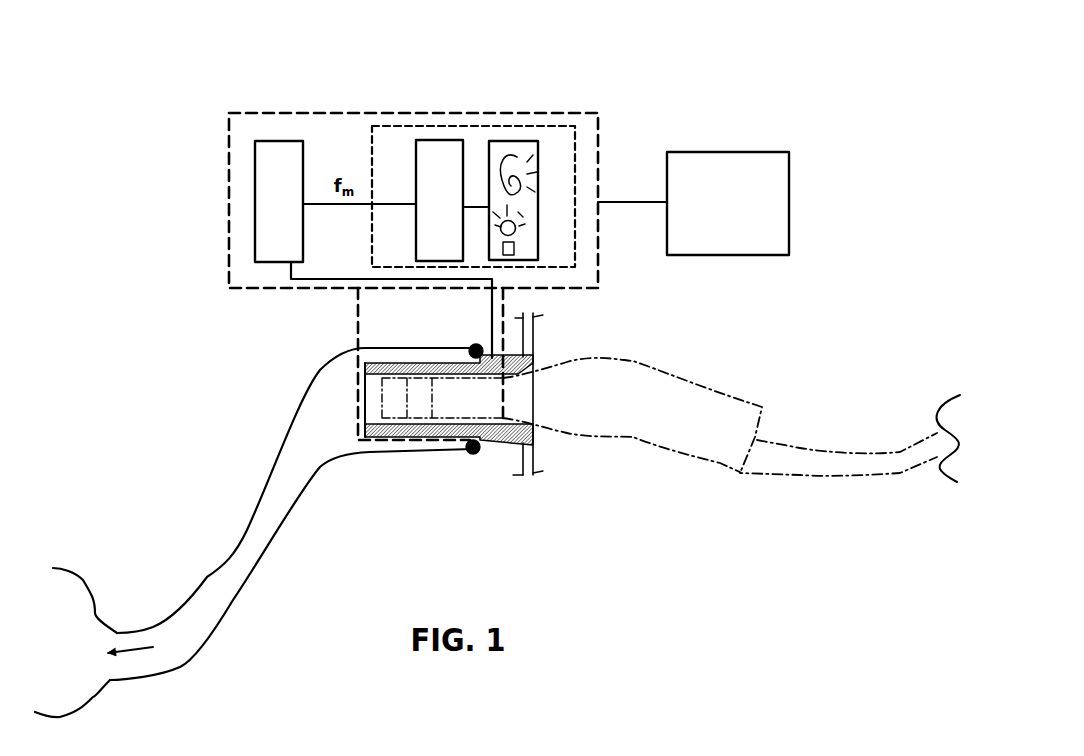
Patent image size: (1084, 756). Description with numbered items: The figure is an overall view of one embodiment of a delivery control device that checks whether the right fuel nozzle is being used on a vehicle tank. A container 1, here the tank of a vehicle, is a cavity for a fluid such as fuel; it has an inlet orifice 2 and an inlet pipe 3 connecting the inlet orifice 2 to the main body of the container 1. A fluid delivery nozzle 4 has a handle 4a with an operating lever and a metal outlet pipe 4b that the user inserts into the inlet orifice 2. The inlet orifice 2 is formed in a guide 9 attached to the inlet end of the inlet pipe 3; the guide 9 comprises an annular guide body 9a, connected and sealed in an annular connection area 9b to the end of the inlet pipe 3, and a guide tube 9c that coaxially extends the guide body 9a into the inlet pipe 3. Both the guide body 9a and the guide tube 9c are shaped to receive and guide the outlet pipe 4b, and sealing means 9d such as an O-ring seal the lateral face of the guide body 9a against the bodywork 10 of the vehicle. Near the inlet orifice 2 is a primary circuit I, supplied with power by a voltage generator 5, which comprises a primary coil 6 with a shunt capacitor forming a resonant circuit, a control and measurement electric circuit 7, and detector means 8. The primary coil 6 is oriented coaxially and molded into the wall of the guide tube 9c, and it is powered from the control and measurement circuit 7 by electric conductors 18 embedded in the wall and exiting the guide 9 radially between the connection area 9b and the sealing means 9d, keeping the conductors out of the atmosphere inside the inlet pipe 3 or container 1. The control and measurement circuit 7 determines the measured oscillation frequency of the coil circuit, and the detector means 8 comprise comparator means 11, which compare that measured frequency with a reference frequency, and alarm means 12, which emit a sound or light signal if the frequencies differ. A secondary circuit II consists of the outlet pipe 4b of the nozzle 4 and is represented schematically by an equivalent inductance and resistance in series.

The container 1 is at (101, 697).
The inlet orifice 2 is at (555, 441).
The inlet pipe 3 is at (258, 540).
The fluid delivery nozzle 4 is at (731, 454).
The handle 4a is at (663, 428).
The outlet pipe 4b is at (398, 396).
The voltage generator 5 is at (775, 200).
The primary coil 6 is at (426, 437).
The control and measurement electric circuit 7 is at (283, 163).
The detector means 8 is at (370, 148).
The guide 9 is at (517, 455).
The annular guide body 9a is at (507, 440).
The annular connection area 9b is at (473, 447).
The guide tube 9c is at (393, 437).
The sealing means 9d is at (540, 347).
The bodywork 10 is at (528, 330).
The comparator means 11 is at (443, 156).
The alarm means 12 is at (523, 238).
The electric conductors 18 is at (372, 296).
The primary circuit I is at (229, 288).
The secondary circuit II is at (425, 398).